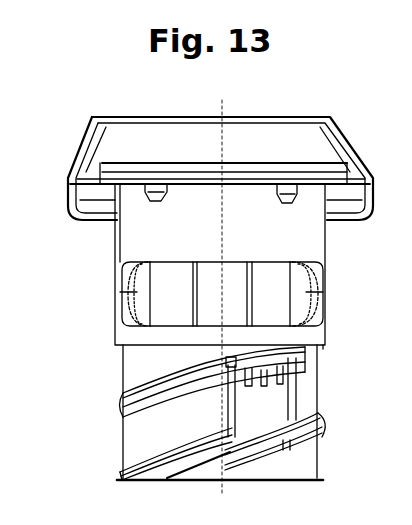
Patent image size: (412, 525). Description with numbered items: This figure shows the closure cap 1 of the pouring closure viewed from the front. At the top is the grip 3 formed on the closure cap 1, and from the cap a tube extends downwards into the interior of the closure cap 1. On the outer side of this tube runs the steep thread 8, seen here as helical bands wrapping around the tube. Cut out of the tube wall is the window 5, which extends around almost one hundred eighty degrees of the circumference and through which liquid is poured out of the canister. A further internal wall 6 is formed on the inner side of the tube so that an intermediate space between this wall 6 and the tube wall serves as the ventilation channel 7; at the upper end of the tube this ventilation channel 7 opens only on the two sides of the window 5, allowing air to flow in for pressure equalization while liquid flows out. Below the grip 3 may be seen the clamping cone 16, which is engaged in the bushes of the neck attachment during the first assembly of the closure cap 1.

The closure cap 1 is at (137, 242).
The grip on the closure cap 3 is at (240, 143).
The window in the tube 5 is at (268, 289).
The internal wall in the tube 6 is at (172, 295).
The ventilation channel 7 is at (137, 305).
The steep thread on the tube 8 is at (148, 408).
The clamping cone on the plate 16 is at (167, 198).